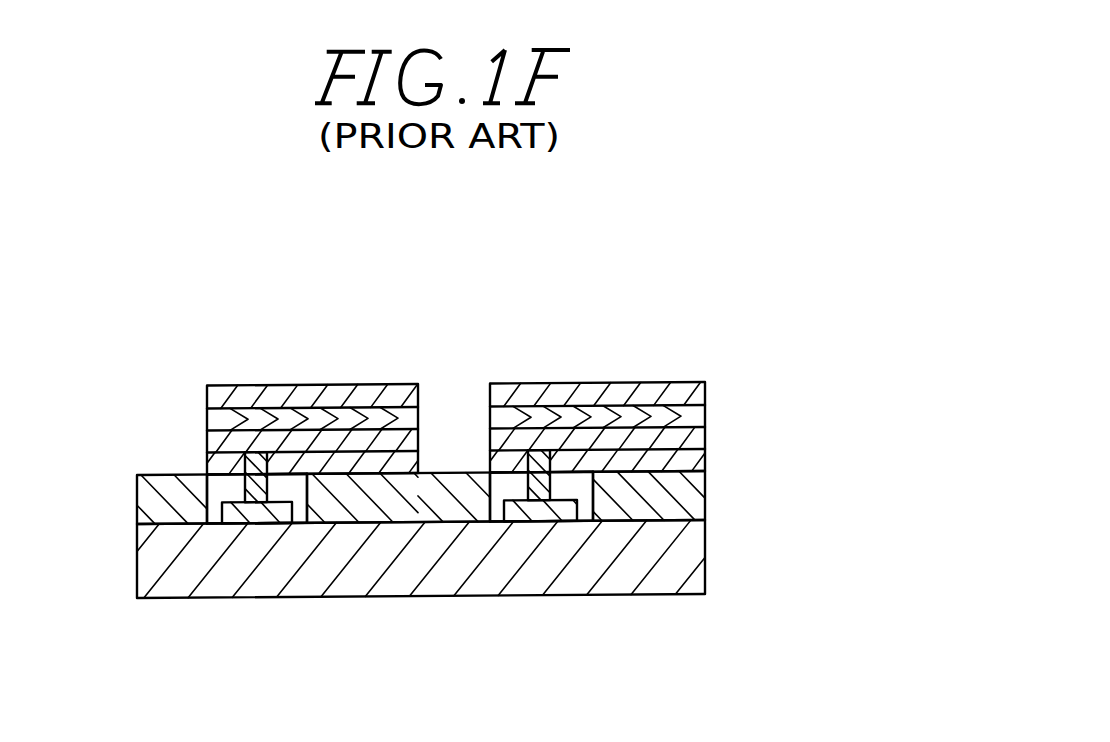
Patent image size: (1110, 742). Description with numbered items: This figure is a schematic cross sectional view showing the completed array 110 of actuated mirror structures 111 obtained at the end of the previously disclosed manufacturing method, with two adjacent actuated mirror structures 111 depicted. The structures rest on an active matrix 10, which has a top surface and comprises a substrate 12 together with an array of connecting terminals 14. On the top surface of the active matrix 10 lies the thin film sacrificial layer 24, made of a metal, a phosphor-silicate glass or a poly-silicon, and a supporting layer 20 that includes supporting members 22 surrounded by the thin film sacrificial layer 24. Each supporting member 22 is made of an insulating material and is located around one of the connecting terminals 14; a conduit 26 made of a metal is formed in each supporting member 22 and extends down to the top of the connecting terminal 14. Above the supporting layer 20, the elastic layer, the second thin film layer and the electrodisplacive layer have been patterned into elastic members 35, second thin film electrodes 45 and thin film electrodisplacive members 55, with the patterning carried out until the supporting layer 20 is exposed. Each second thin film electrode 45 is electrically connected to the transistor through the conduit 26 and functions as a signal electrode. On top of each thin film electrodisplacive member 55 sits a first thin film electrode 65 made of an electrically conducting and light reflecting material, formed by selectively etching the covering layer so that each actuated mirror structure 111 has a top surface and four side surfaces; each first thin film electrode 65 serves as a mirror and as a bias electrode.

The array of M×N actuated mirror structures 110 is at (745, 217).
The actuated mirror structure 111 is at (417, 268).
The active matrix 10 is at (122, 503).
The substrate 12 is at (383, 582).
The connecting terminal 14 is at (263, 517).
The supporting layer 20 is at (432, 502).
The supporting member 22 is at (290, 482).
The thin film sacrificial layer 24 is at (687, 492).
The conduit 26 is at (257, 457).
The elastic member 35 is at (687, 462).
The second thin film electrode 45 is at (688, 440).
The thin film electrodisplacive member 55 is at (688, 413).
The first thin film electrode 65 is at (685, 395).